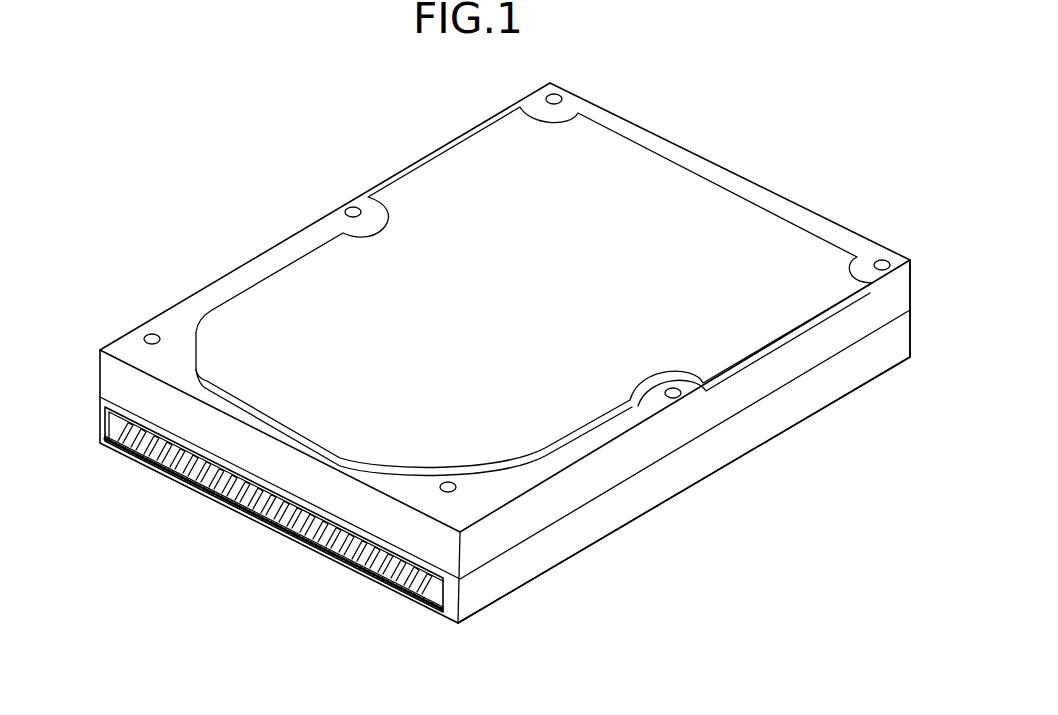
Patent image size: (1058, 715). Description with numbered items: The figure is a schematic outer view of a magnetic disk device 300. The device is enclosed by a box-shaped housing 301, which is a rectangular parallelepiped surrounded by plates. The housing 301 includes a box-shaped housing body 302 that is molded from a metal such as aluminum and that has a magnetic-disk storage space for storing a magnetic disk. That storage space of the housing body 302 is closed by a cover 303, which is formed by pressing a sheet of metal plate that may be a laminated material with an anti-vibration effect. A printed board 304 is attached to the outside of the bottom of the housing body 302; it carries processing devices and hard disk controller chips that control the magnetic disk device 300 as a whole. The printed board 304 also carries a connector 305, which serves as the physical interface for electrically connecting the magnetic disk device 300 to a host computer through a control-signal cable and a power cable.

The magnetic disk device 300 is at (740, 160).
The housing 301 is at (258, 252).
The housing body 302 is at (915, 283).
The cover 303 is at (462, 165).
The printed board 304 is at (122, 458).
The connector 305 is at (228, 512).